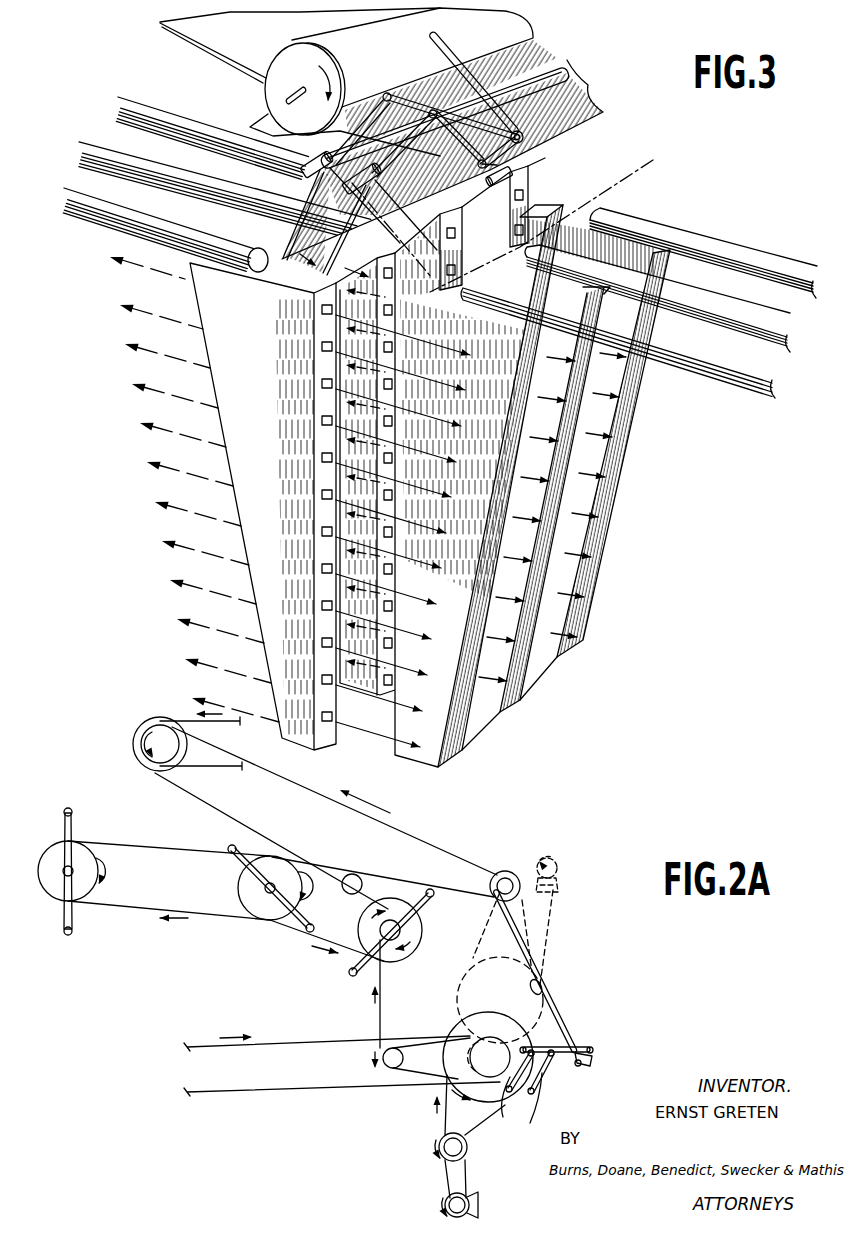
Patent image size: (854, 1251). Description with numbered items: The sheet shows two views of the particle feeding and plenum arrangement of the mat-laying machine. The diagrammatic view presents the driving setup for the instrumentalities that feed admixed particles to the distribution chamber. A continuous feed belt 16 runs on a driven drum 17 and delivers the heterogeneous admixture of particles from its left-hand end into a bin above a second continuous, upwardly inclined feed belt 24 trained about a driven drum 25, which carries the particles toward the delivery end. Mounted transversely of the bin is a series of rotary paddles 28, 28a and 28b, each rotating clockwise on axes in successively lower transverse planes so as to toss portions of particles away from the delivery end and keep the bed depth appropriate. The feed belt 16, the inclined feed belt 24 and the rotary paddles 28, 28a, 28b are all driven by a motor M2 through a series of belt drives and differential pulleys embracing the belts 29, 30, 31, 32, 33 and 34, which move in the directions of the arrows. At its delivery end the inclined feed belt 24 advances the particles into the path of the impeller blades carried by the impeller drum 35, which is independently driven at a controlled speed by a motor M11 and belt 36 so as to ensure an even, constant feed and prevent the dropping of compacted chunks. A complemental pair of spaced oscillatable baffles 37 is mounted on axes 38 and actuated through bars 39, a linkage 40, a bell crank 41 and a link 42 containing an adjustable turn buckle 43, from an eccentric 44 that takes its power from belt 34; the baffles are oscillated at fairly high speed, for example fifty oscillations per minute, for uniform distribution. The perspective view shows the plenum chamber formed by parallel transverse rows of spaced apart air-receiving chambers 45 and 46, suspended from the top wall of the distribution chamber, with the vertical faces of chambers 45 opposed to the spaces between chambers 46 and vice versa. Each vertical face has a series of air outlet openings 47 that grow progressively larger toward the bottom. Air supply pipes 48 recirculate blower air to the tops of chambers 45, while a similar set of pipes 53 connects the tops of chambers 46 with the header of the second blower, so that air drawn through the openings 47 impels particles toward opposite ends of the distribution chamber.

In FIG. 2A, the continuous feed belt 16 is at (238, 720).
In FIG. 2A, the driven drum 17 is at (142, 748).
In FIG. 3, the inclined feed belt 24 is at (229, 31).
In FIG. 2A, the inclined feed belt 24 is at (341, 1037).
In FIG. 3, the driven drum 25 is at (265, 87).
In FIG. 2A, the driven drum 25 is at (467, 1055).
In FIG. 2A, the rotary paddle 28 is at (75, 831).
In FIG. 2A, the rotary paddle 28a is at (237, 868).
In FIG. 2A, the rotary paddle 28b is at (418, 900).
In FIG. 2A, the belt 29 is at (443, 1170).
In FIG. 2A, the belt 30 is at (443, 1120).
In FIG. 2A, the belt 31 is at (383, 1007).
In FIG. 2A, the belt 32 is at (293, 937).
In FIG. 2A, the belt 33 is at (147, 913).
In FIG. 2A, the belt 34 is at (243, 829).
In FIG. 2A, the impeller drum 35 is at (497, 960).
In FIG. 2A, the belt 36 is at (557, 937).
In FIG. 2A, the oscillatable baffle 37 is at (512, 1118).
In FIG. 3, the axis 38 is at (345, 187).
In FIG. 3, the bar 39 is at (393, 150).
In FIG. 2A, the bar 39 is at (547, 1067).
In FIG. 3, the linkage 40 is at (514, 120).
In FIG. 2A, the linkage 40 is at (580, 1048).
In FIG. 3, the bell crank 41 is at (520, 152).
In FIG. 2A, the bell crank 41 is at (592, 1062).
In FIG. 3, the link 42 is at (426, 33).
In FIG. 2A, the link 42 is at (539, 949).
In FIG. 2A, the adjustable turn buckle 43 is at (547, 990).
In FIG. 2A, the eccentric 44 is at (494, 889).
In FIG. 3, the air-receiving chamber 45 is at (460, 727).
In FIG. 3, the air-receiving chamber 46 is at (222, 347).
In FIG. 3, the air outlet opening 47 is at (326, 458).
In FIG. 3, the air supply pipe 48 is at (776, 376).
In FIG. 3, the pipe 53 is at (186, 178).
In FIG. 2A, the motor M2 is at (447, 1202).
In FIG. 2A, the motor M11 is at (563, 883).